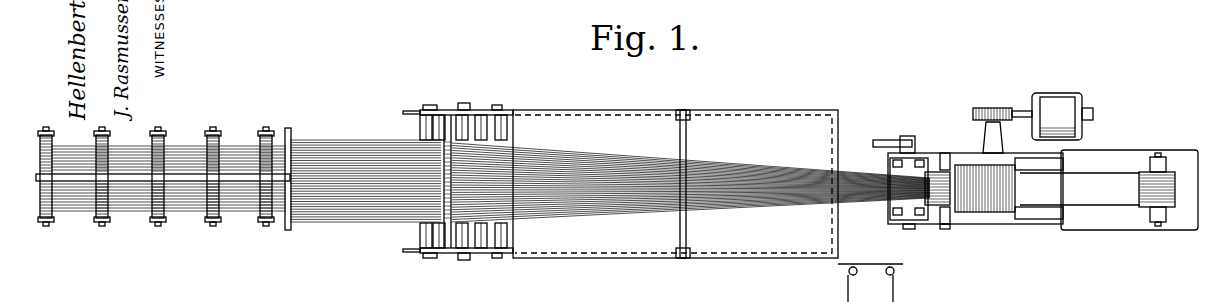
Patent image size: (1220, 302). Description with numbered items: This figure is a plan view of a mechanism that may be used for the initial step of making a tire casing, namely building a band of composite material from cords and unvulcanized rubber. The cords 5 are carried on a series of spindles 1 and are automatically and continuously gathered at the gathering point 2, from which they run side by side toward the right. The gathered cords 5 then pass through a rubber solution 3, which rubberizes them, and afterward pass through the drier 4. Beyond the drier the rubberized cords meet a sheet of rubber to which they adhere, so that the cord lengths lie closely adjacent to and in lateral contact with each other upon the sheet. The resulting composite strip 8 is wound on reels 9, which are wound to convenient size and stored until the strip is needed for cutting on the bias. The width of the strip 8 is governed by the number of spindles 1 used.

The spindles 1 is at (203, 223).
The gathering point 2 is at (431, 227).
The rubber solution 3 is at (446, 240).
The drier 4 is at (617, 245).
The cords 5 is at (352, 141).
The composite strip 8 is at (1092, 197).
The reels 9 is at (1148, 177).